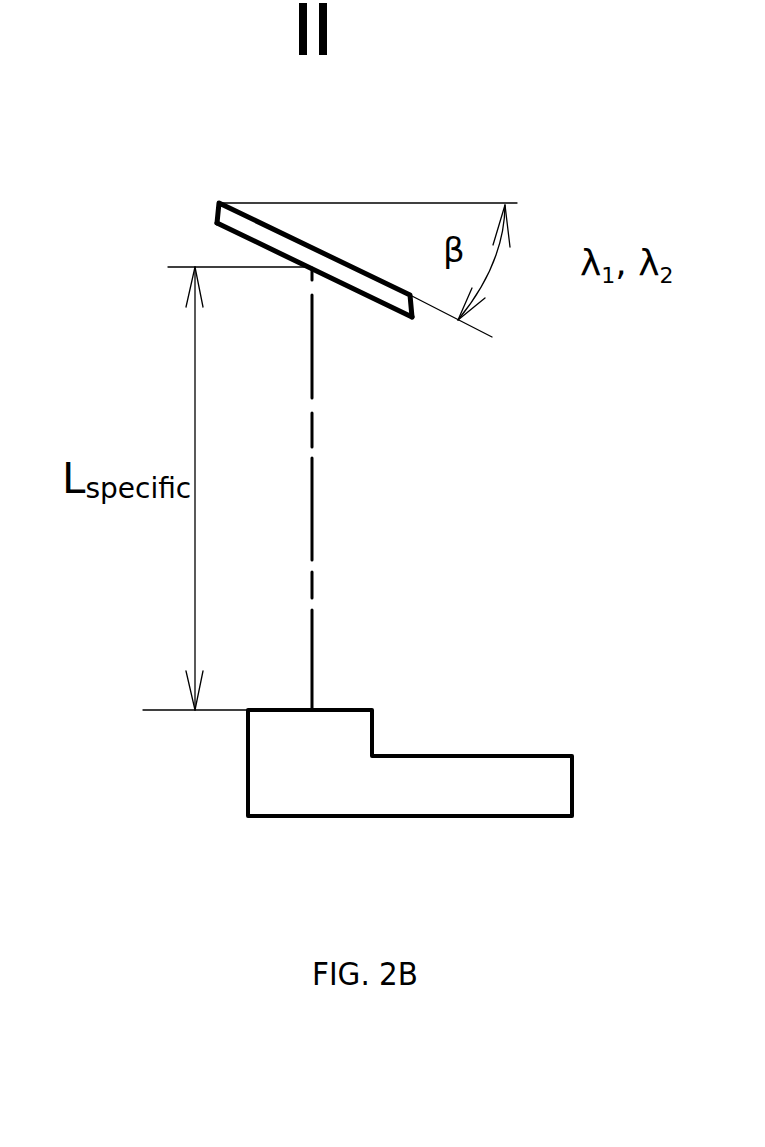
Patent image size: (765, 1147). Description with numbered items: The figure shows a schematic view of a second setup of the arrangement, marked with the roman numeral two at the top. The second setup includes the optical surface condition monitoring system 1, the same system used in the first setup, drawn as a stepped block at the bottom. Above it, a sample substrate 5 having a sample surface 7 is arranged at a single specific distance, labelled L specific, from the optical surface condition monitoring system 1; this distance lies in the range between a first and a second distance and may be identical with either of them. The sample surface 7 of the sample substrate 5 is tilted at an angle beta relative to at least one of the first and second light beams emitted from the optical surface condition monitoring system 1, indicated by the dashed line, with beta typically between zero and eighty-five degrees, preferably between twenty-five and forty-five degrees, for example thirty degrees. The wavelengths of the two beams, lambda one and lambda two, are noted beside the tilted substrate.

The optical surface condition monitoring system 1 is at (458, 775).
The sample substrate 5 is at (390, 297).
The sample surface 7 is at (328, 278).